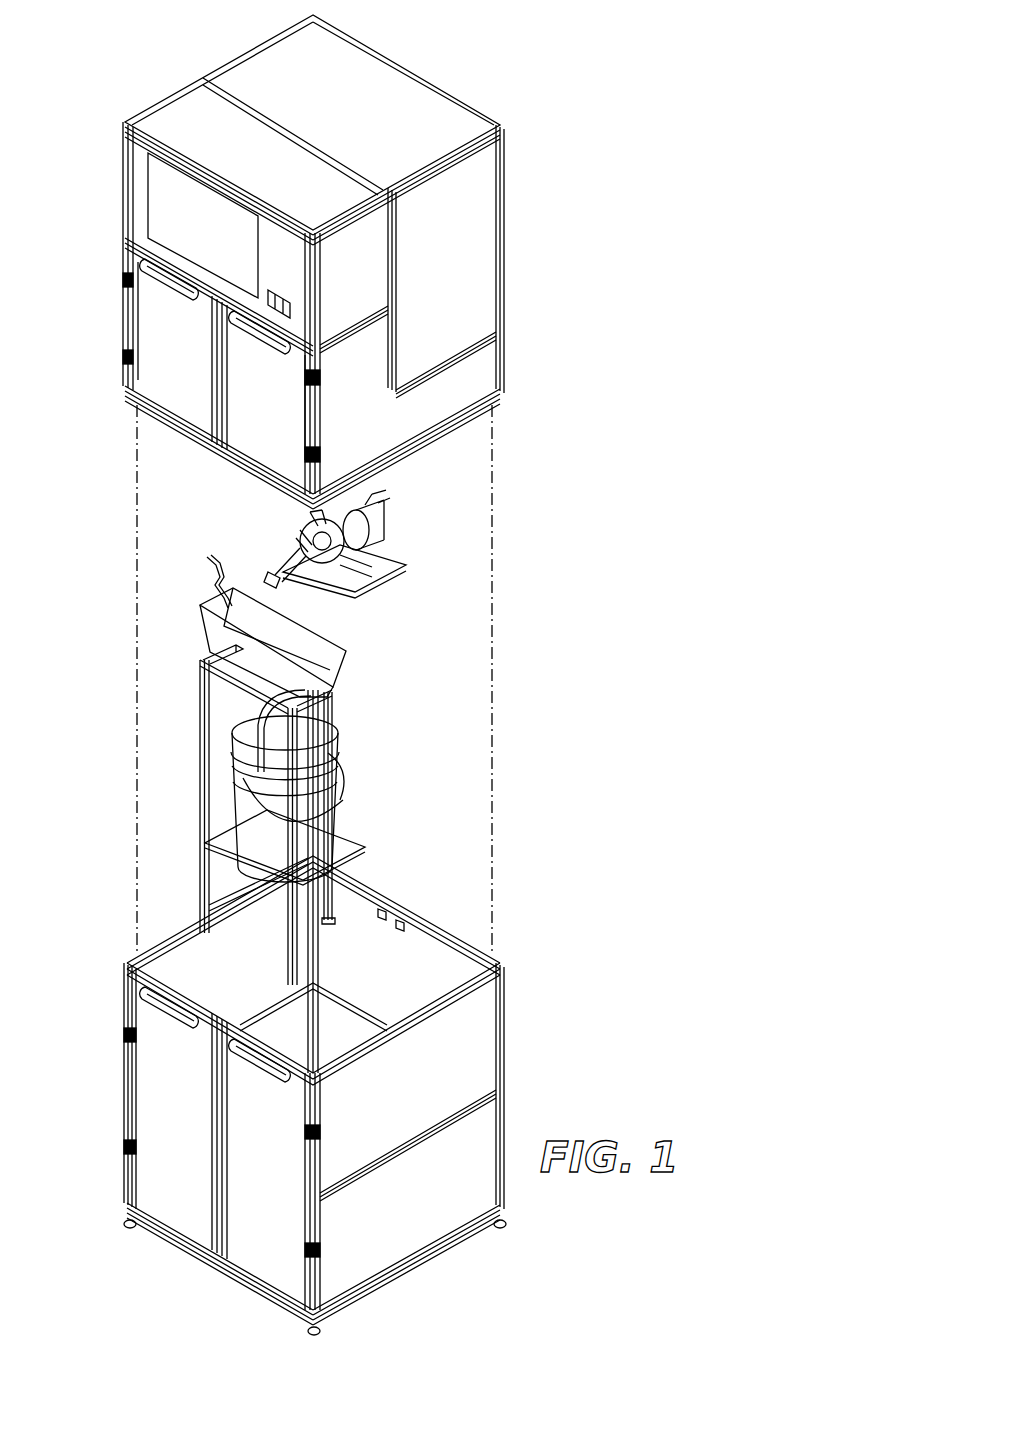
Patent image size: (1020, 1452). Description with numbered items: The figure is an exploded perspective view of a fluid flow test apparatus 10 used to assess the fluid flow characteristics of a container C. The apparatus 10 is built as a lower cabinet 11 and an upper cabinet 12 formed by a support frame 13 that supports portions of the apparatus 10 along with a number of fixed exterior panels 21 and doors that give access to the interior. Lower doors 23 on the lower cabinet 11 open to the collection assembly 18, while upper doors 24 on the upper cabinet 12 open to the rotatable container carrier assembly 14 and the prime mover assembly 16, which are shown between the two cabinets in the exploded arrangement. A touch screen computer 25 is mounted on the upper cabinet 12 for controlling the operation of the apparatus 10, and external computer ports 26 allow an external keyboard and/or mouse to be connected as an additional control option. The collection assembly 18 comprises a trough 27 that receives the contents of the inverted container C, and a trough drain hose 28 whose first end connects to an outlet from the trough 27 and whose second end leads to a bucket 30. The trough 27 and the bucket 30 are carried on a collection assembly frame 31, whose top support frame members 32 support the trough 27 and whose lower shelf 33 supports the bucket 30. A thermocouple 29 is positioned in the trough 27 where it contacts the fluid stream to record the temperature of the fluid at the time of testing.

The fluid flow test apparatus 10 is at (656, 262).
The lower cabinet 11 is at (508, 1062).
The upper cabinet 12 is at (508, 305).
The support frame 13 is at (505, 155).
The rotatable container carrier assembly 14 is at (285, 558).
The prime mover assembly 16 is at (404, 524).
The collection assembly 18 is at (372, 733).
The exterior panels 21 is at (485, 190).
The lower doors 23 is at (262, 1203).
The upper doors 24 is at (245, 375).
The touch screen computer 25 is at (165, 190).
The external computer ports 26 is at (270, 296).
The trough 27 is at (302, 646).
The trough drain hose 28 is at (243, 702).
The thermocouple 29 is at (224, 612).
The bucket 30 is at (325, 795).
The collection assembly frame 31 is at (207, 800).
The top support frame members 32 is at (216, 668).
The lower shelf 33 is at (350, 846).
The container C is at (290, 542).